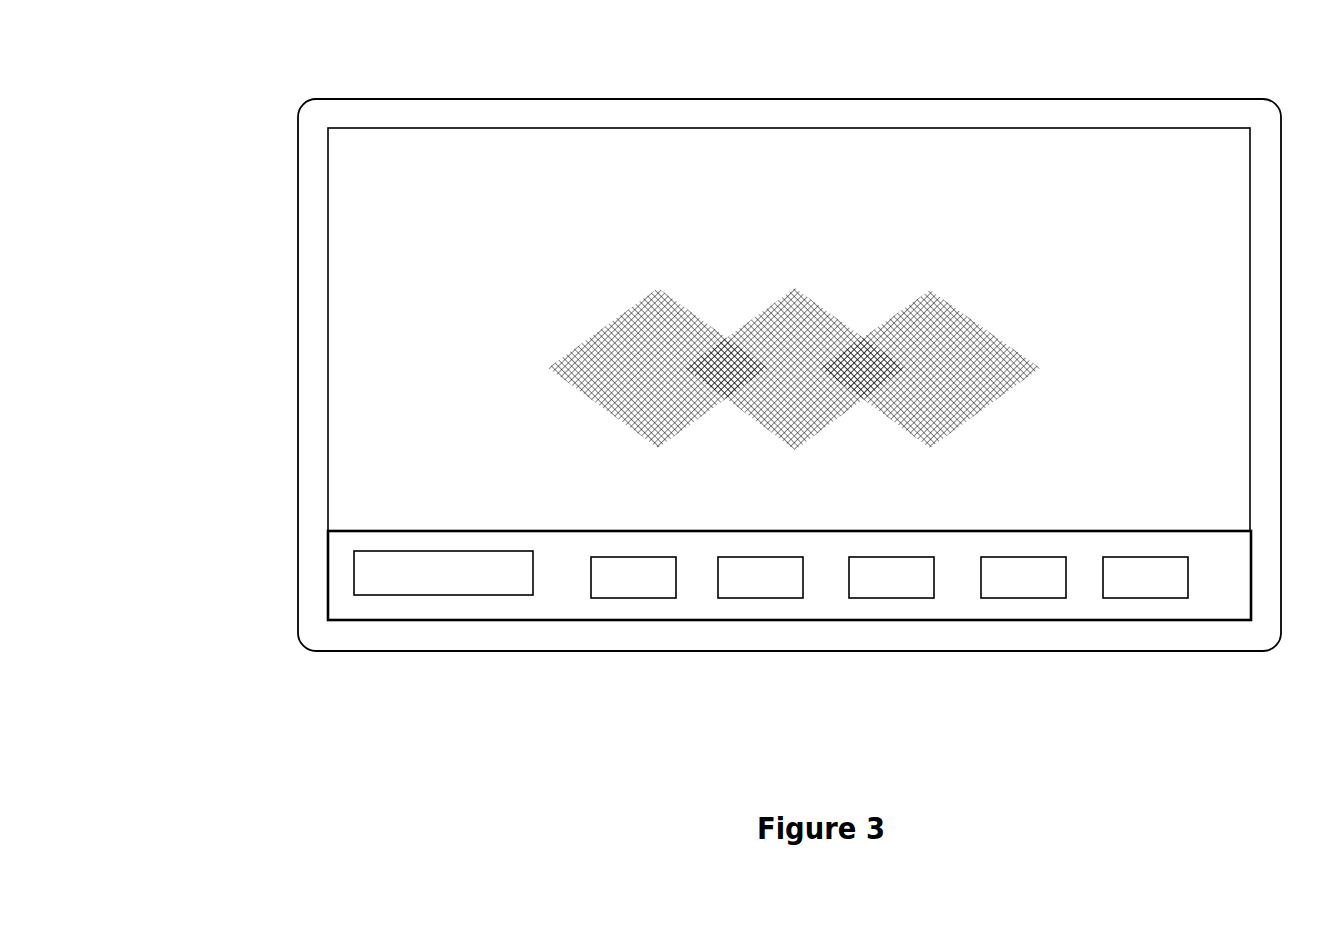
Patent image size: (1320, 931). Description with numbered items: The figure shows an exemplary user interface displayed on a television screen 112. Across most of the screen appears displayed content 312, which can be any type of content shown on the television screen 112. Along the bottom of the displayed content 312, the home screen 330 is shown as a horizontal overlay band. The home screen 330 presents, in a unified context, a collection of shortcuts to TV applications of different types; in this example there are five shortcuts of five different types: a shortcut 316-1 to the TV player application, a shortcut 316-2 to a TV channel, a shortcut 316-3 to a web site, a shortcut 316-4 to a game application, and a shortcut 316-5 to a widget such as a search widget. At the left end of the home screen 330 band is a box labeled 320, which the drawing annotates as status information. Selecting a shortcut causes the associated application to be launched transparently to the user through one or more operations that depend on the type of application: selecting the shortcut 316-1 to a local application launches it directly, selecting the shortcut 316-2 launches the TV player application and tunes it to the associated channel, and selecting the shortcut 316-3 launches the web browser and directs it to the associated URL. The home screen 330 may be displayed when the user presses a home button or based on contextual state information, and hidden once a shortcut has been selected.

The television screen 112 is at (407, 99).
The displayed content 312 is at (1120, 160).
The home screen user interface 330 is at (342, 583).
The status information 320 is at (434, 692).
The shortcut to the TV player application 316-1 is at (627, 665).
The shortcut to a TV channel 316-2 is at (752, 665).
The shortcut to a web site 316-3 is at (872, 668).
The shortcut to game application 316-4 is at (1020, 665).
The shortcut to a widget 316-5 is at (1143, 665).